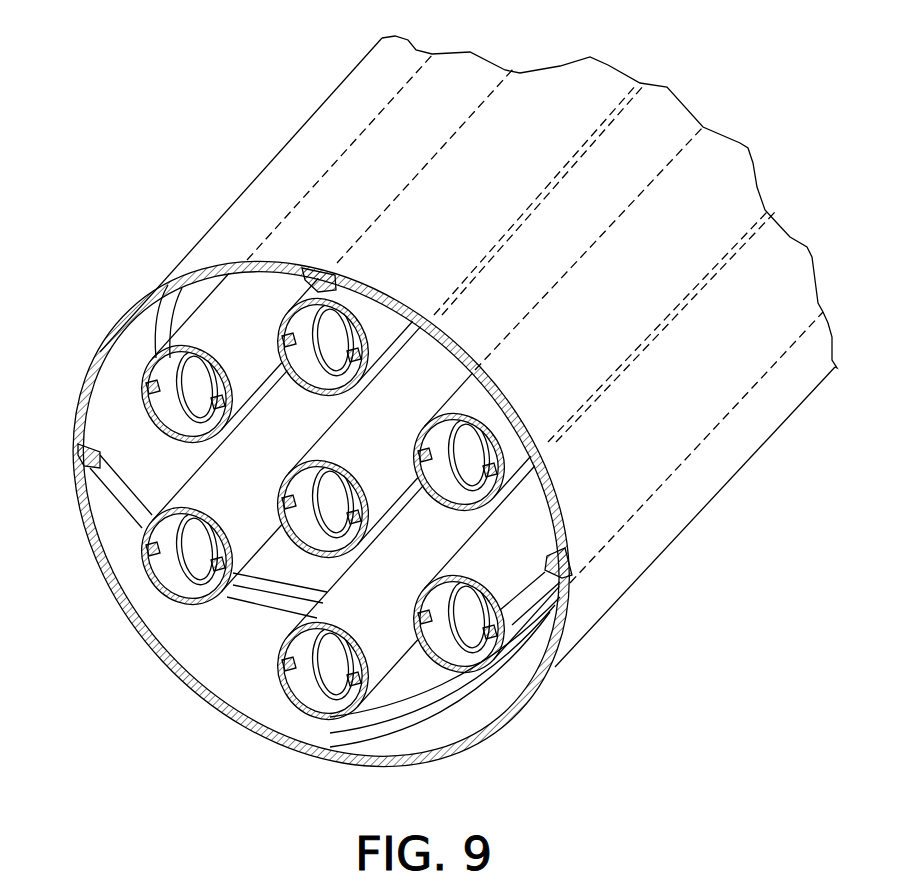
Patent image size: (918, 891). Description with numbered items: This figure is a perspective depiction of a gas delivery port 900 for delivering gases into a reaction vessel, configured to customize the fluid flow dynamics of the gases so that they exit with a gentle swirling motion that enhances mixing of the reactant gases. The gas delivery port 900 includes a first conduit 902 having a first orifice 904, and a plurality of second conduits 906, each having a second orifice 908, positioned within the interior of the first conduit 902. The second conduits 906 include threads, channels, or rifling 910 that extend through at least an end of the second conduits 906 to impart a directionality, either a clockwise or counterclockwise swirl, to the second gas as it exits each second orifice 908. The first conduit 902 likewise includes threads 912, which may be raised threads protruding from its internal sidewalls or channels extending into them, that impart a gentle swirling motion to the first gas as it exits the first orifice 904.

The gas delivery port 900 is at (212, 118).
The first conduit 902 is at (198, 282).
The first orifice 904 is at (120, 373).
The second conduits 906 is at (373, 650).
The second orifice 908 is at (307, 682).
The threads 910 is at (240, 570).
The threads 912 is at (72, 443).